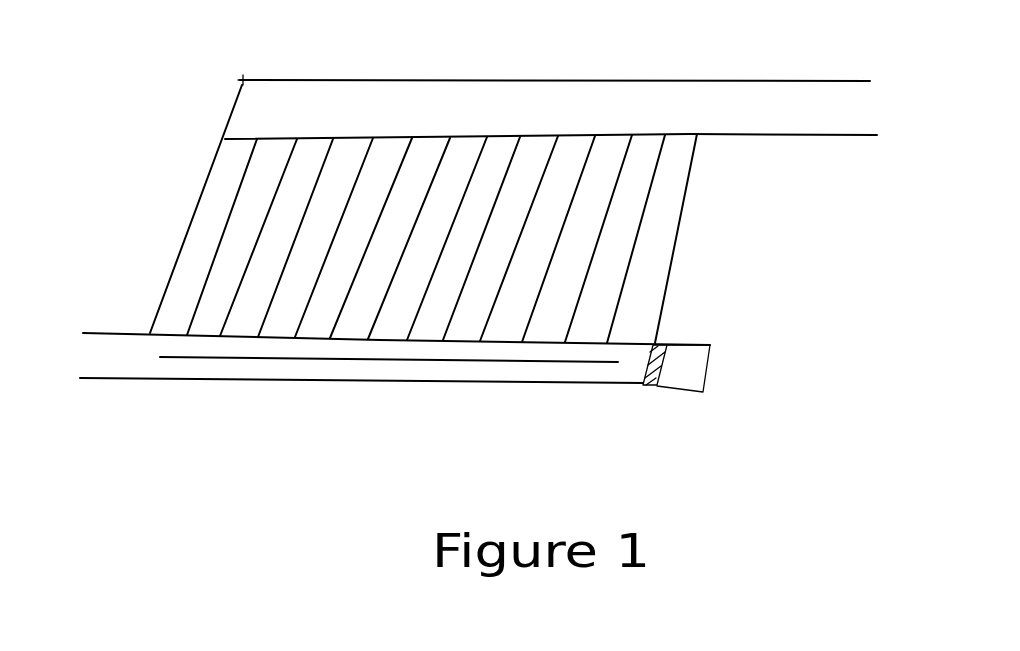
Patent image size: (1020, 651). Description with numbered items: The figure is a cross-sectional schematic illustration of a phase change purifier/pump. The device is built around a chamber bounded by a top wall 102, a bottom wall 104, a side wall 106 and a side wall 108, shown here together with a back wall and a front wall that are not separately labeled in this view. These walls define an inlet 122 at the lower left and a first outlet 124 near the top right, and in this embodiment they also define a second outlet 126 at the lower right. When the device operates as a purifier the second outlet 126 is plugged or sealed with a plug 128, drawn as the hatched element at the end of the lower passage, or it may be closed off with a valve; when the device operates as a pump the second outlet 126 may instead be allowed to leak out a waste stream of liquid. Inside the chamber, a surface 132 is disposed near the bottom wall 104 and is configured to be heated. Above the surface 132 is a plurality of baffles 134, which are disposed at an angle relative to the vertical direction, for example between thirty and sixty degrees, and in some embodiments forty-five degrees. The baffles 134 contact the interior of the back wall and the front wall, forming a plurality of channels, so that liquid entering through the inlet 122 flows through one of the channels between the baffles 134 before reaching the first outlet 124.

The top wall 102 is at (522, 80).
The bottom wall 104 is at (383, 386).
The side wall 106 is at (198, 183).
The side wall 108 is at (677, 233).
The inlet 122 is at (85, 352).
The first outlet 124 is at (794, 101).
The second outlet 126 is at (721, 368).
The plug 128 is at (648, 395).
The surface 132 is at (267, 365).
The baffles 134 is at (273, 125).